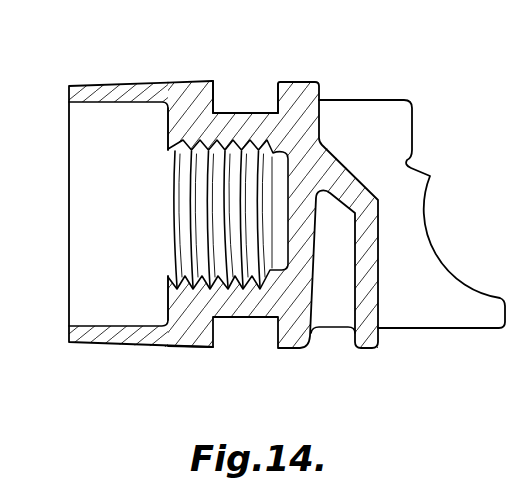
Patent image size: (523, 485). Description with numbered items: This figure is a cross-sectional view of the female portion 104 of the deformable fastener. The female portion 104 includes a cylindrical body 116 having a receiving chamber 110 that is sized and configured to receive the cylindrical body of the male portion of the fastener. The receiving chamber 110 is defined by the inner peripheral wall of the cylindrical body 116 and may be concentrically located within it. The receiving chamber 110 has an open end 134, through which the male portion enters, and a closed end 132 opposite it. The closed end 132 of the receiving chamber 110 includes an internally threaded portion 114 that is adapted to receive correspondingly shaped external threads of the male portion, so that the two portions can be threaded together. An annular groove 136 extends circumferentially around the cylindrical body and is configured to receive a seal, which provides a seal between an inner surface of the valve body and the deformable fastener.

The female portion 104 is at (348, 363).
The receiving chamber 110 is at (120, 103).
The internally threaded portion 114 is at (232, 291).
The cylindrical body 116 is at (482, 0).
The closed end 132 is at (168, 300).
The open end 134 is at (62, 302).
The annular groove 136 is at (247, 112).